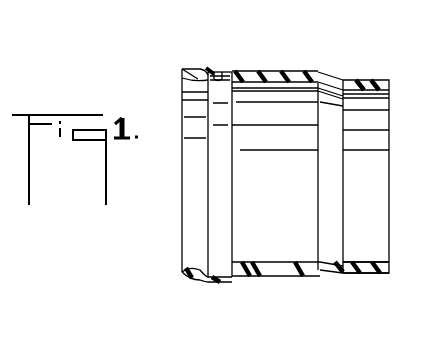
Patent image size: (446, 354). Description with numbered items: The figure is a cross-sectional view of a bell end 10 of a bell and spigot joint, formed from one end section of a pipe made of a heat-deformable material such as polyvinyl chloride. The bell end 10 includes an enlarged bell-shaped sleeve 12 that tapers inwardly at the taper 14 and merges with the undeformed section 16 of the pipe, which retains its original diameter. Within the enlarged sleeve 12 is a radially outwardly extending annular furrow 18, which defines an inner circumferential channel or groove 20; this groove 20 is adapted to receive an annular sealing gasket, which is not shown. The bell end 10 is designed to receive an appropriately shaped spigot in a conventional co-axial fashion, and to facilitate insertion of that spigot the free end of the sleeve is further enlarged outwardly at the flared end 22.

The bell end 10 is at (270, 47).
The enlarged bell-shaped sleeve 12 is at (325, 79).
The inward taper 14 is at (333, 82).
The undeformed section 16 is at (365, 268).
The annular furrow 18 is at (210, 68).
The inner circumferential channel or groove 20 is at (222, 72).
The outwardly enlarged free end 22 is at (182, 275).